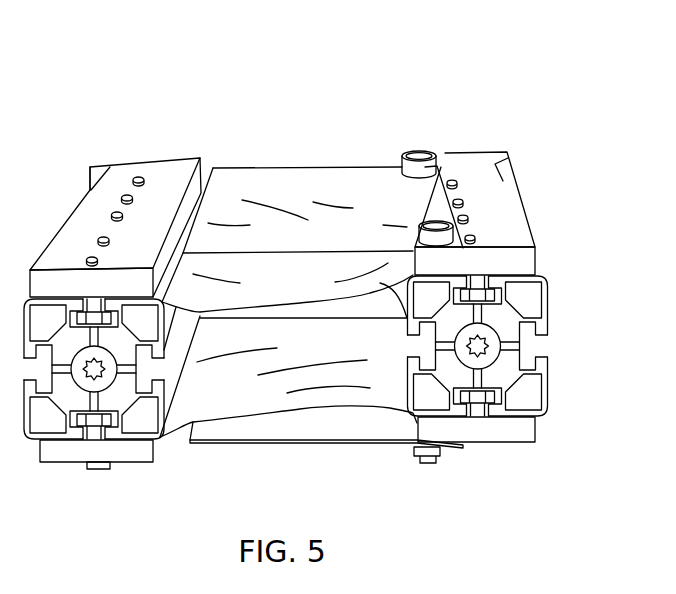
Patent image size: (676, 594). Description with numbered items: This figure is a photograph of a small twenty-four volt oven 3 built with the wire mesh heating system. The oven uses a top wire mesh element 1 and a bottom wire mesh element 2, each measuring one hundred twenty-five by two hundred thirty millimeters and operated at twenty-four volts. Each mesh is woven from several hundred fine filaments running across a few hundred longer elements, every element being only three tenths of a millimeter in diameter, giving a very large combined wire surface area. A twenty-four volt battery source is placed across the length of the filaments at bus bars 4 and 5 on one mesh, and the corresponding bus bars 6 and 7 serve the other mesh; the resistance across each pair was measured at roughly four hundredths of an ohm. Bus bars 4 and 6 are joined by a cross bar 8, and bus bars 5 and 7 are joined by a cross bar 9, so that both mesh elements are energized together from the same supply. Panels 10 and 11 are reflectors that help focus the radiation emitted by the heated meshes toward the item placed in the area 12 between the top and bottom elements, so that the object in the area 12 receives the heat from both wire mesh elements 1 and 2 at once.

The top wire mesh element 1 is at (290, 283).
The bottom wire mesh element 2 is at (243, 393).
The oven 3 is at (566, 66).
The bus bar 4 is at (139, 175).
The bus bar 5 is at (443, 157).
The bus bar 6 is at (133, 453).
The bus bar 7 is at (483, 433).
The cross bar 8 is at (107, 163).
The cross bar 9 is at (497, 143).
The reflector panel 10 is at (363, 443).
The reflector panel 11 is at (308, 177).
The area 12 is at (293, 345).